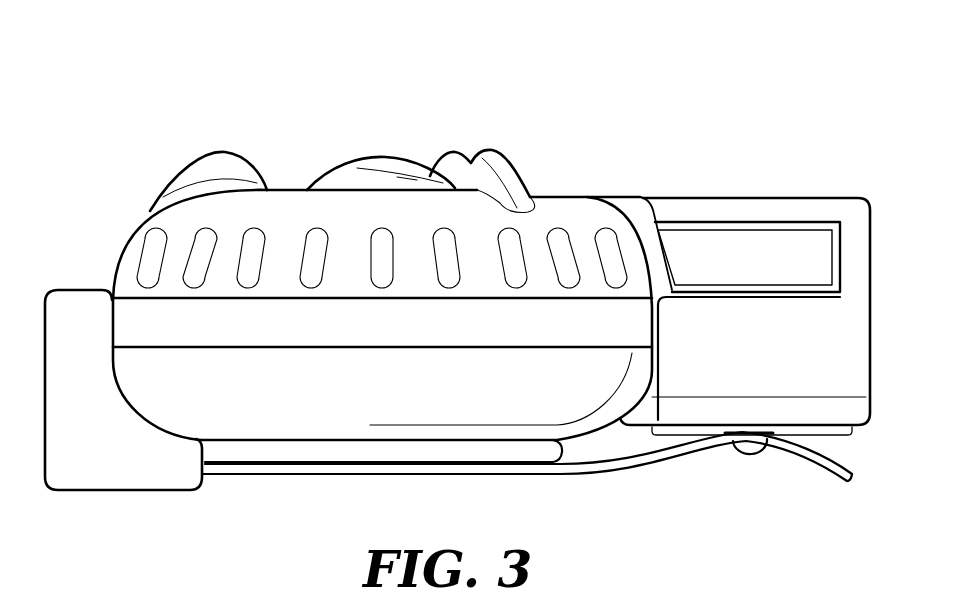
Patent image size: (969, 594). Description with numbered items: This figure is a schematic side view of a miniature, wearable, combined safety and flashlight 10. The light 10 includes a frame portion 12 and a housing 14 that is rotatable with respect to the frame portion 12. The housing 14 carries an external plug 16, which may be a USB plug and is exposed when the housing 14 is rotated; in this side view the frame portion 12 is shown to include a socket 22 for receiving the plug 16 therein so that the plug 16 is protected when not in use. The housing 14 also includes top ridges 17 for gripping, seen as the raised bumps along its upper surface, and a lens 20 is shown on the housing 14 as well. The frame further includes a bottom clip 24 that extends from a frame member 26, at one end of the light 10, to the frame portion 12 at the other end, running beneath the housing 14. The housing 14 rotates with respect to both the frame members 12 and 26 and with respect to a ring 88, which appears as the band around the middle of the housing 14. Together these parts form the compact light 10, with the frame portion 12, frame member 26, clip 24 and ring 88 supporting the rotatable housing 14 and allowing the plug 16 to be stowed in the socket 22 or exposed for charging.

The combined safety and flashlight 10 is at (166, 116).
The frame portion 12 is at (680, 198).
The housing 14 is at (285, 203).
The external plug 16 is at (813, 260).
The top ridges 17 is at (503, 153).
The lens 20 is at (371, 158).
The socket 22 is at (747, 227).
The bottom clip 24 is at (643, 468).
The frame member 26 is at (75, 305).
The ring 88 is at (265, 320).